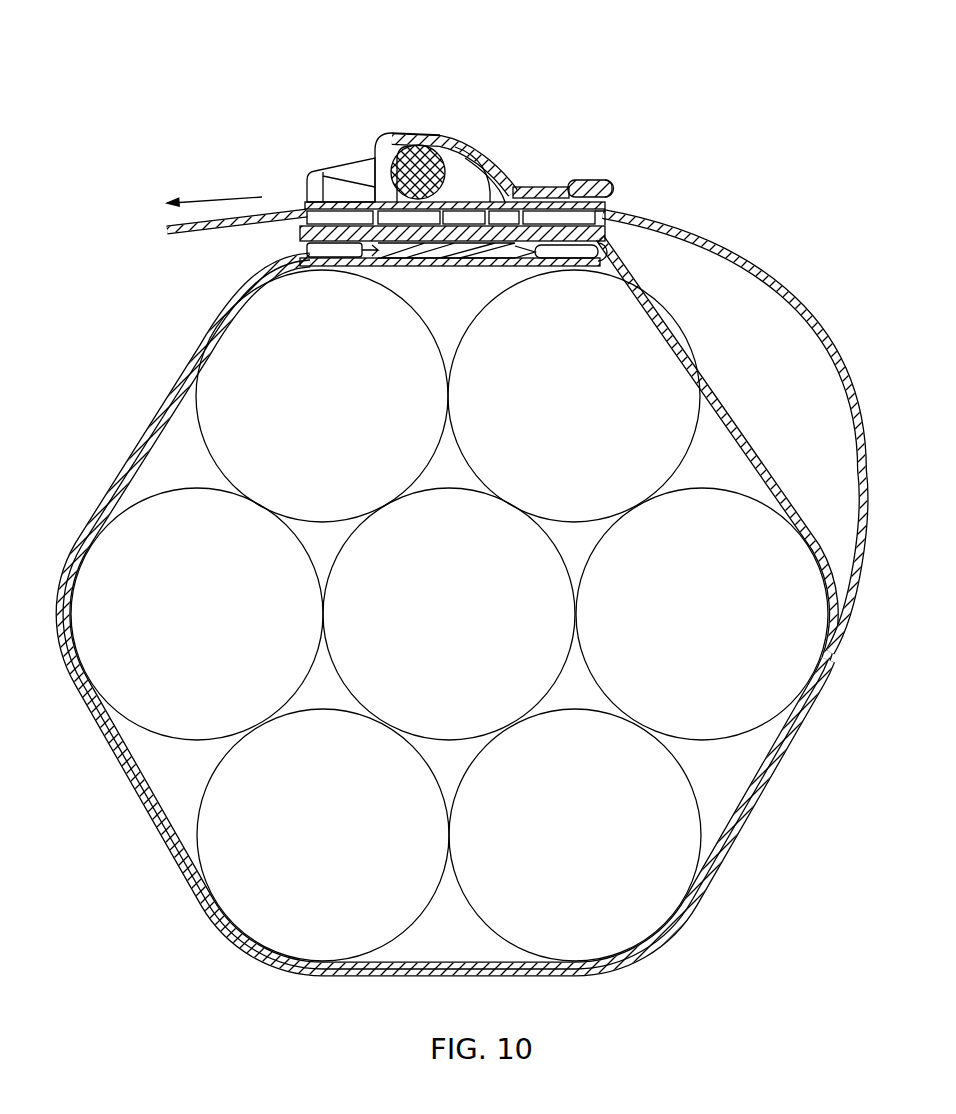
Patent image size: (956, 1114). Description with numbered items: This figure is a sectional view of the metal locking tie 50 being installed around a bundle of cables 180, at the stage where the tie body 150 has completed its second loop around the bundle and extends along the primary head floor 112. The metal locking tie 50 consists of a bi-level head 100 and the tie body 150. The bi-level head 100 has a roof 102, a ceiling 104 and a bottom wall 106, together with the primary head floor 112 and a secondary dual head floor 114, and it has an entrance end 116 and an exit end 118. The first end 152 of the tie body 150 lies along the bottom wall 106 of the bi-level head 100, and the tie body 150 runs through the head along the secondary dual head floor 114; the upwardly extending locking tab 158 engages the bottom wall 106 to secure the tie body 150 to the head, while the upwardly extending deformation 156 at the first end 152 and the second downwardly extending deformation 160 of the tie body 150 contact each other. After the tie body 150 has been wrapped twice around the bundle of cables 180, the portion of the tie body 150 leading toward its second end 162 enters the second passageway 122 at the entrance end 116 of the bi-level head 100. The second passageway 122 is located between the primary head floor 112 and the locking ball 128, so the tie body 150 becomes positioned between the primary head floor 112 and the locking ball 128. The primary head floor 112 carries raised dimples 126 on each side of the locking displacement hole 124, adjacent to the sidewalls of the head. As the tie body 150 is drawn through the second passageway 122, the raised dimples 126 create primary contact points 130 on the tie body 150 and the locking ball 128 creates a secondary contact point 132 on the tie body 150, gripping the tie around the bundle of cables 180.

The metal locking tie 50 is at (593, 65).
The bi-level head 100 is at (432, 200).
The roof 102 is at (430, 134).
The ceiling 104 is at (548, 186).
The bottom wall 106 is at (582, 262).
The primary head floor 112 is at (460, 147).
The secondary dual head floor 114 is at (305, 228).
The entrance end 116 is at (620, 187).
The exit end 118 is at (310, 183).
The second passageway 122 is at (606, 206).
The locking displacement hole 124 is at (473, 150).
The raised dimples 126 is at (495, 153).
The locking ball 128 is at (392, 140).
The primary contact points 130 is at (508, 180).
The secondary contact point 132 is at (445, 146).
The tie body 150 is at (150, 383).
The first end 152 is at (297, 270).
The upwardly extending deformation 156 is at (390, 266).
The upwardly extending locking tab 158 is at (510, 262).
The second downwardly extending deformation 160 is at (432, 256).
The second end 162 is at (168, 235).
The bundle of cables 180 is at (310, 855).